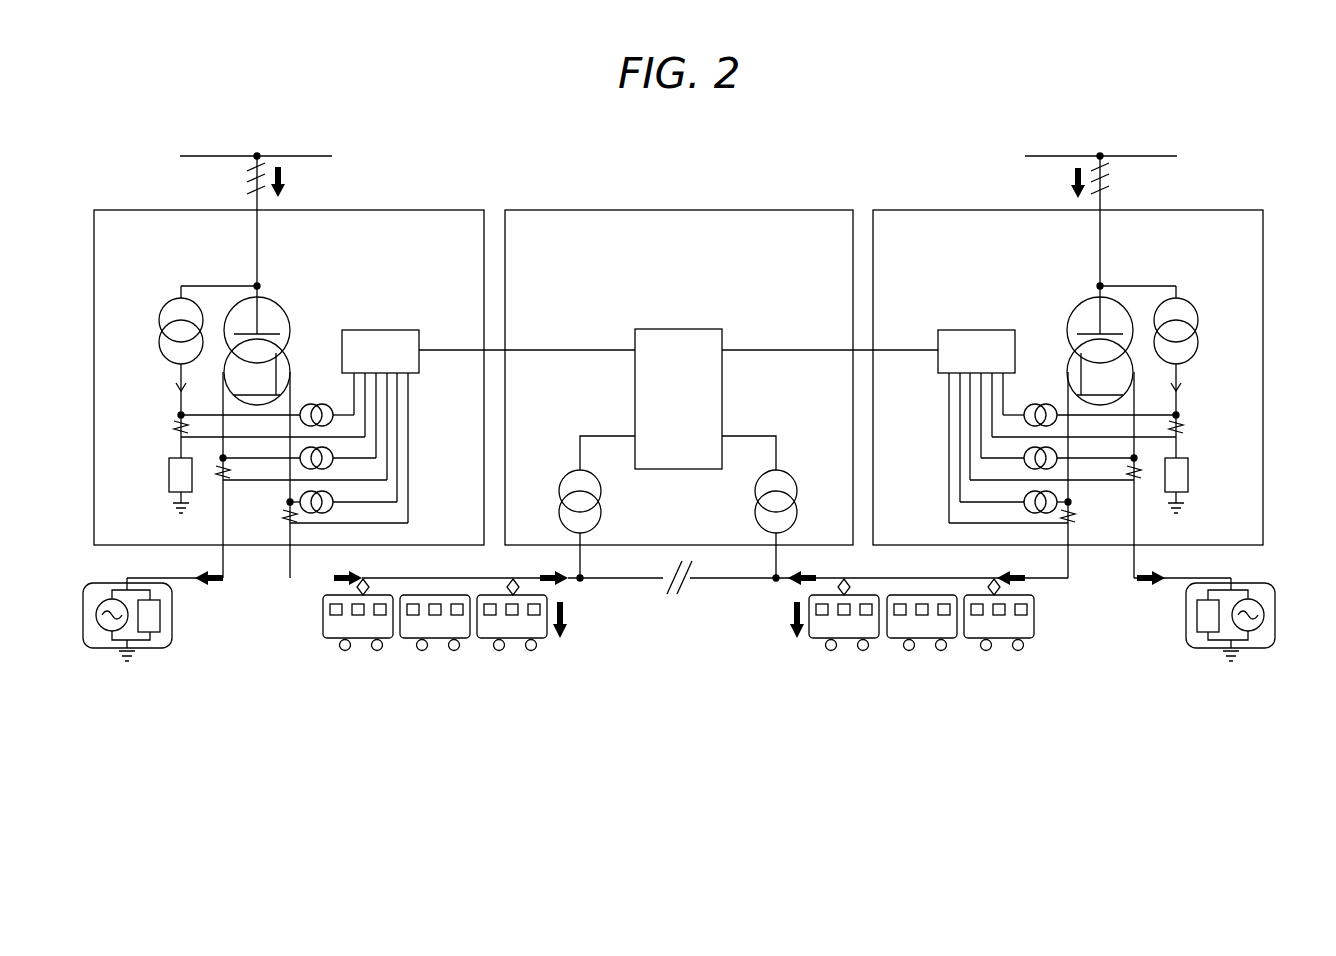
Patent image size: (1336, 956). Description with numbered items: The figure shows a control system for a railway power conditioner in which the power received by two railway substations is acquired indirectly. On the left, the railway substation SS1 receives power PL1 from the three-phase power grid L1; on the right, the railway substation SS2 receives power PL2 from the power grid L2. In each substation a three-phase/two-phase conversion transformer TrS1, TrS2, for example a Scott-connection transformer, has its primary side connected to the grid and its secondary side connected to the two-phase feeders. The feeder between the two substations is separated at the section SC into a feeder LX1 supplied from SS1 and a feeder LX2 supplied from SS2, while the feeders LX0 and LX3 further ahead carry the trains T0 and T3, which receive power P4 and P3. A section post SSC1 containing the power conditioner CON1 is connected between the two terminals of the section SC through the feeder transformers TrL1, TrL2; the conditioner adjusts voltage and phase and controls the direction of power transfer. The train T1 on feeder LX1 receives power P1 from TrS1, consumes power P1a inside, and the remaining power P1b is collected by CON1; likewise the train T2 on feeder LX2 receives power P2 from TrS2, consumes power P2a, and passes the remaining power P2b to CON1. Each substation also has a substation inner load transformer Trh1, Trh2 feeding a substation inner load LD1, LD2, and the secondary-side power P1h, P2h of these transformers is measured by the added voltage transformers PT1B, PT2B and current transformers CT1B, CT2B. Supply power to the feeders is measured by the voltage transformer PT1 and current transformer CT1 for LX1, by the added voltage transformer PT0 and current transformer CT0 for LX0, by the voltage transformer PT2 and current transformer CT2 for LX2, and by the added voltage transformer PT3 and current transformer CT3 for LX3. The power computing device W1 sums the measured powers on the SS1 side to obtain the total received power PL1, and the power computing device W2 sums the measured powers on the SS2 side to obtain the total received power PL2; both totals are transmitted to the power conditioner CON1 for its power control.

The power grid L1 is at (302, 154).
The received power PL1 is at (286, 178).
The railway substation SS1 is at (425, 210).
The substation inner load transformer Trh1 is at (160, 308).
The three-phase/two-phase conversion transformer TrS1 is at (288, 312).
The power computing device W1 is at (383, 330).
The secondary-side power P1h is at (178, 378).
The current transformer CT1B is at (178, 430).
The substation inner load LD1 is at (168, 474).
The current transformer CT0 is at (218, 478).
The current transformer CT1 is at (284, 520).
The voltage transformer PT1B is at (332, 407).
The voltage transformer PT0 is at (332, 450).
The voltage transformer PT1 is at (332, 493).
The feeder LX0 is at (167, 576).
The power P4 is at (220, 579).
The feeder power P1 is at (343, 576).
The feeder LX1 is at (458, 577).
The remaining power P1b is at (548, 576).
The consumed power P1a is at (570, 611).
The train T0 is at (83, 618).
The train T1 is at (323, 622).
The section SC is at (681, 598).
The section post SSC1 is at (694, 210).
The power conditioner CON1 is at (680, 329).
The feeder transformer TrL1 is at (562, 488).
The feeder transformer TrL2 is at (790, 488).
The power grid L2 is at (1137, 154).
The received power PL2 is at (1068, 180).
The railway substation SS2 is at (906, 210).
The power computing device W2 is at (965, 330).
The three-phase/two-phase conversion transformer TrS2 is at (1072, 318).
The substation inner load transformer Trh2 is at (1198, 312).
The secondary-side power P2h is at (1184, 378).
The current transformer CT2B is at (1184, 430).
The substation inner load LD2 is at (1190, 472).
The current transformer CT3 is at (1140, 480).
The current transformer CT2 is at (1074, 520).
The voltage transformer PT2B is at (1026, 407).
The voltage transformer PT3 is at (1026, 450).
The voltage transformer PT2 is at (1026, 493).
The remaining power P2b is at (814, 575).
The feeder LX2 is at (897, 577).
The feeder power P2 is at (1015, 575).
The power P3 is at (1137, 576).
The feeder LX3 is at (1180, 577).
The consumed power P2a is at (790, 612).
The train T2 is at (1040, 622).
The train T3 is at (1280, 610).